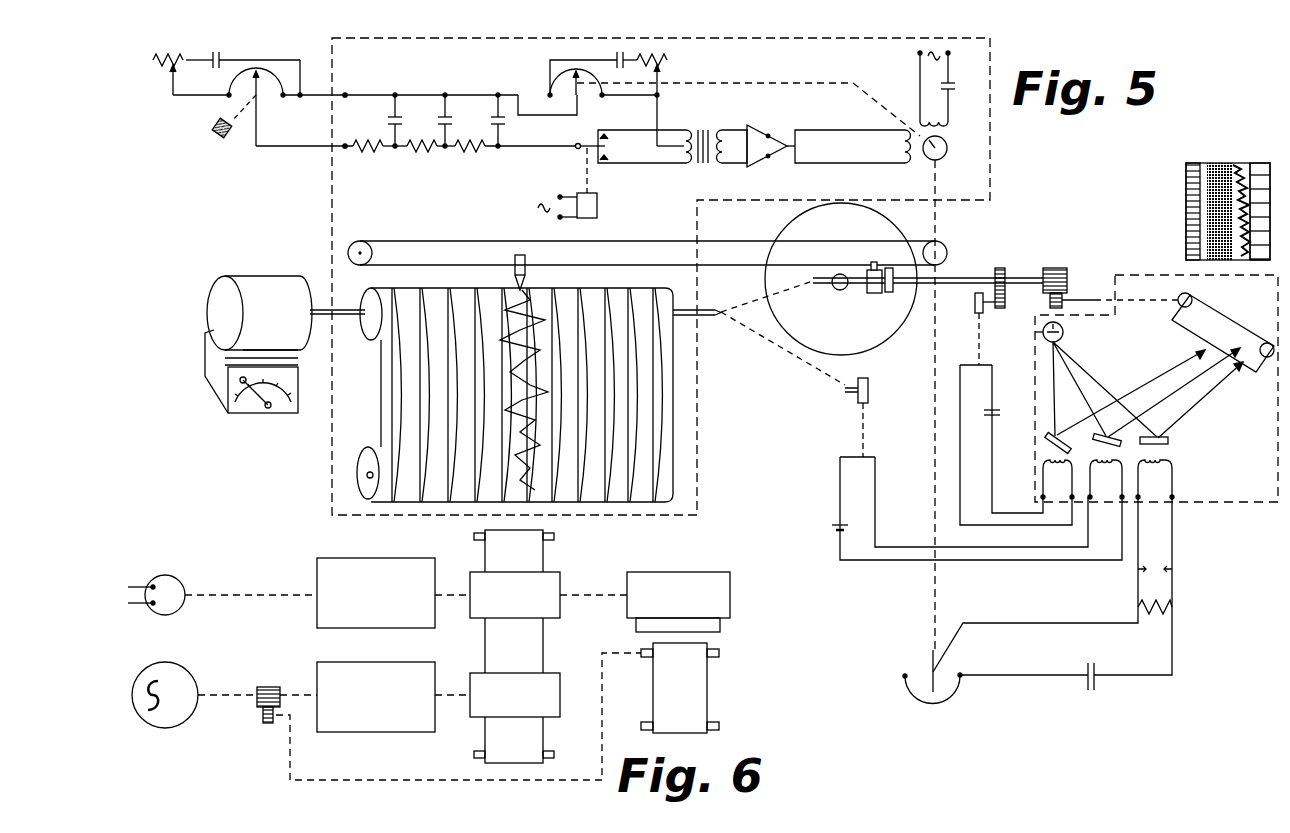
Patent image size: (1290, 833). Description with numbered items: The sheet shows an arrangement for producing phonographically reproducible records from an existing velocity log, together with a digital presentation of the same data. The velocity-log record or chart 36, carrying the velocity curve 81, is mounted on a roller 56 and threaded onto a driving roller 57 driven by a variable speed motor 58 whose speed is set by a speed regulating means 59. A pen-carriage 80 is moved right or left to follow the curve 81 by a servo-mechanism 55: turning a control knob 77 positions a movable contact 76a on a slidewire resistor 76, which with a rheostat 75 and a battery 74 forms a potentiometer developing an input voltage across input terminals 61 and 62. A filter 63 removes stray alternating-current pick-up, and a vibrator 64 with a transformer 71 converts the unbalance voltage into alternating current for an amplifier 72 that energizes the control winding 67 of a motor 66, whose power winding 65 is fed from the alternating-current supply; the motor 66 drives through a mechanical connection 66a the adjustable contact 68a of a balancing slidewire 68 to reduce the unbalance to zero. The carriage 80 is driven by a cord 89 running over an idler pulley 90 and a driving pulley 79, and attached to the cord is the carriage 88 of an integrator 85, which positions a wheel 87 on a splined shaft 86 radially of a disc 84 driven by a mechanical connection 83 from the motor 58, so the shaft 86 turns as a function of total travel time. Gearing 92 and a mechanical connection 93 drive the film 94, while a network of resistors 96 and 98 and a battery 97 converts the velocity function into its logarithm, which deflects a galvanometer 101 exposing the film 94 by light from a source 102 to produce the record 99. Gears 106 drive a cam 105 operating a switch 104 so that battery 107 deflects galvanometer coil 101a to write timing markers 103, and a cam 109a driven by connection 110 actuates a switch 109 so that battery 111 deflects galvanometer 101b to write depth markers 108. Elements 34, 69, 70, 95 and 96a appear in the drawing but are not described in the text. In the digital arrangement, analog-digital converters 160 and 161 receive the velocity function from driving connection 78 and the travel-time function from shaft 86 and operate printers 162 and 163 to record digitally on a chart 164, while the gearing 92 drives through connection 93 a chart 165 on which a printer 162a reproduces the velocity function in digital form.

In FIG. 6, the drive motor 34 is at (167, 584).
In FIG. 5, the record or chart 36 is at (381, 399).
In FIG. 5, the servo-mechanism 55 is at (330, 216).
In FIG. 5, the roller 56 is at (366, 469).
In FIG. 5, the driving roller 57 is at (372, 331).
In FIG. 5, the variable speed motor 58 is at (266, 287).
In FIG. 5, the speed regulating means 59 is at (255, 406).
In FIG. 5, the input terminal 61 is at (347, 93).
In FIG. 5, the input terminal 62 is at (347, 149).
In FIG. 5, the filter 63 is at (418, 120).
In FIG. 5, the vibrator 64 is at (591, 178).
In FIG. 5, the power winding 65 is at (949, 123).
In FIG. 5, the motor 66 is at (944, 158).
In FIG. 5, the mechanical connection 66a is at (822, 84).
In FIG. 5, the control winding 67 is at (905, 151).
In FIG. 5, the balancing slidewire 68 is at (592, 78).
In FIG. 5, the adjustable contact 68a is at (576, 94).
In FIG. 5, the capacitor 69 is at (616, 52).
In FIG. 5, the potentiometer 70 is at (669, 61).
In FIG. 5, the transformer 71 is at (703, 128).
In FIG. 5, the amplifier 72 is at (767, 137).
In FIG. 5, the battery 74 is at (221, 58).
In FIG. 5, the series resistor or rheostat 75 is at (171, 57).
In FIG. 5, the resistor 76 is at (270, 66).
In FIG. 5, the movable contact 76a is at (260, 89).
In FIG. 5, the control knob 77 is at (225, 138).
In FIG. 5, the driving connection 78 is at (940, 220).
In FIG. 6, the driving connection 78 is at (241, 593).
In FIG. 5, the driving pulley 79 is at (948, 254).
In FIG. 5, the pen-carriage 80 is at (527, 272).
In FIG. 5, the velocity curve 81 is at (530, 387).
In FIG. 5, the mechanical connection 83 is at (366, 310).
In FIG. 5, the disc 84 is at (787, 226).
In FIG. 5, the integrator 85 is at (898, 367).
In FIG. 6, the integrator 85 is at (128, 753).
In FIG. 5, the splined shaft 86 is at (977, 277).
In FIG. 6, the splined shaft 86 is at (210, 690).
In FIG. 5, the driving wheel 87 is at (888, 294).
In FIG. 5, the carriage 88 is at (866, 286).
In FIG. 5, the driving cord 89 is at (745, 244).
In FIG. 5, the idler pulley 90 is at (361, 246).
In FIG. 5, the gearing 92 is at (1070, 290).
In FIG. 6, the gearing 92 is at (259, 712).
In FIG. 5, the mechanical connection 93 is at (1138, 303).
In FIG. 6, the mechanical connection 93 is at (289, 749).
In FIG. 5, the recording medium 94 is at (1208, 330).
In FIG. 5, the photoelectric reader 95 is at (1220, 503).
In FIG. 5, the resistor 96 is at (952, 696).
In FIG. 5, the switch arm 96a is at (931, 690).
In FIG. 5, the battery 97 is at (1092, 680).
In FIG. 5, the resistor 98 is at (1160, 612).
In FIG. 5, the record 99 is at (1232, 165).
In FIG. 5, the galvanometer 101 is at (1170, 447).
In FIG. 5, the galvanometer coil 101a is at (1045, 444).
In FIG. 5, the galvanometer 101b is at (1164, 423).
In FIG. 5, the light source 102 is at (1064, 331).
In FIG. 5, the timing markers 103 is at (1186, 195).
In FIG. 5, the switch 104 is at (981, 365).
In FIG. 5, the cam 105 is at (975, 303).
In FIG. 5, the gears 106 is at (1000, 295).
In FIG. 5, the battery 107 is at (996, 412).
In FIG. 5, the depth markers 108 is at (1258, 173).
In FIG. 5, the switch 109 is at (876, 459).
In FIG. 5, the cam 109a is at (869, 393).
In FIG. 5, the connection 110 is at (790, 358).
In FIG. 5, the battery 111 is at (832, 532).
In FIG. 6, the analog-digital converter 160 is at (416, 565).
In FIG. 6, the analog-digital converter 161 is at (391, 733).
In FIG. 6, the printer 162 is at (551, 578).
In FIG. 6, the printer 162a is at (731, 597).
In FIG. 6, the printer 163 is at (549, 680).
In FIG. 6, the chart 164 is at (500, 637).
In FIG. 6, the chart 165 is at (702, 703).